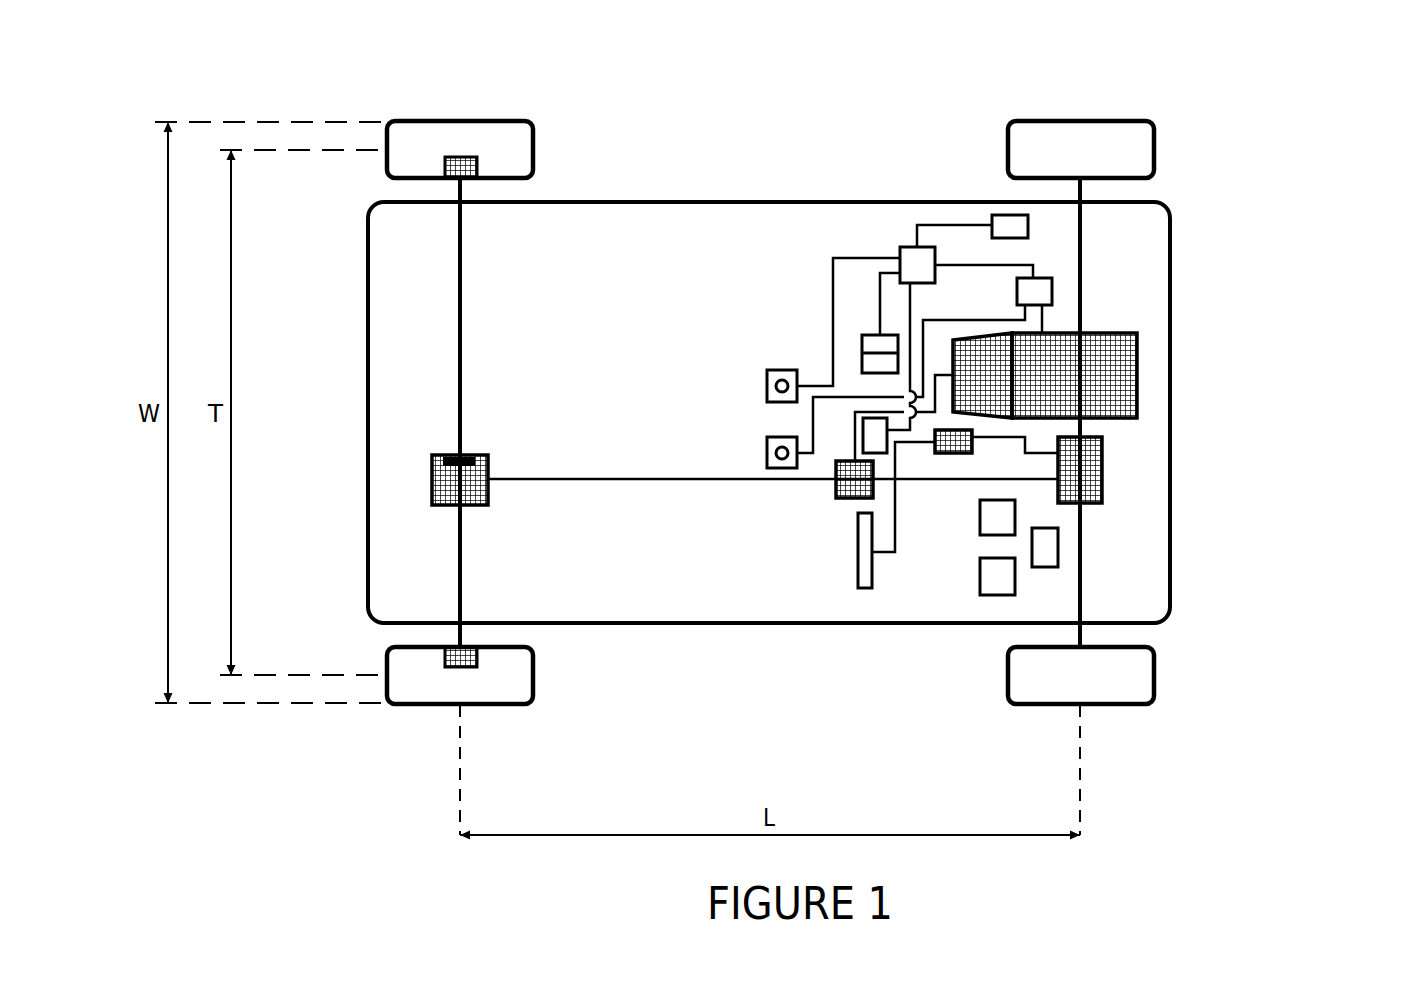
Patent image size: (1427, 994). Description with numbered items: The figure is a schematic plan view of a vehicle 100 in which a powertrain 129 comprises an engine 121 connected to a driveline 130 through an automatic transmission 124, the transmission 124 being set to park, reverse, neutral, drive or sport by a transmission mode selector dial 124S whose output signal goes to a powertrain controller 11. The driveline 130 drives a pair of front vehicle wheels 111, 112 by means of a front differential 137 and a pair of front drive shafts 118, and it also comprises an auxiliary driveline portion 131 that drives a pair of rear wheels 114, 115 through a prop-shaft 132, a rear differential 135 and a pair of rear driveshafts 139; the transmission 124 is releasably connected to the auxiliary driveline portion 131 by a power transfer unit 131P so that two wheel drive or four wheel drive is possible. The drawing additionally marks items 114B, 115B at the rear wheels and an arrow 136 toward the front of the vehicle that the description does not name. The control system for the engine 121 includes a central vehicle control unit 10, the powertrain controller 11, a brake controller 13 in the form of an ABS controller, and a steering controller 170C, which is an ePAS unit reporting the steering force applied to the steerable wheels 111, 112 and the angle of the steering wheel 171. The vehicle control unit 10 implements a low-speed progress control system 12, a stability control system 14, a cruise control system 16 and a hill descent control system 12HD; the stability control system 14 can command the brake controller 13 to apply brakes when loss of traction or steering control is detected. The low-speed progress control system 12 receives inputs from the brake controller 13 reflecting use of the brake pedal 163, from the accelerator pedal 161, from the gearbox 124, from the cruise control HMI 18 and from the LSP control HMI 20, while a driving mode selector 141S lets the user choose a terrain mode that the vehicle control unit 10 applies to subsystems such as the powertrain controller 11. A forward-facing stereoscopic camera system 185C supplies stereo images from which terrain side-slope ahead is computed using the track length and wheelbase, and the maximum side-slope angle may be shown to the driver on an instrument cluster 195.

The vehicle 100 is at (1312, 140).
The front vehicle wheel 111 is at (1125, 143).
The front vehicle wheel 112 is at (1128, 690).
The rear wheel 114 is at (432, 143).
The front wheel brake 114B is at (459, 156).
The rear wheel 115 is at (417, 682).
The front wheel brake 115B is at (468, 668).
The front drive shaft 118 is at (1202, 571).
The engine 121 is at (1107, 363).
The automatic transmission 124 is at (980, 350).
The transmission mode selector dial 124S is at (767, 452).
The powertrain 129 is at (1305, 378).
The driveline 130 is at (1272, 602).
The auxiliary driveline portion 131 is at (658, 668).
The power transfer unit 131P is at (848, 490).
The auxiliary driveshaft or prop-shaft 132 is at (620, 482).
The rear differential 135 is at (432, 481).
The front drive portion 136 is at (443, 318).
The front differential 137 is at (1093, 463).
The rear driveshaft 139 is at (460, 556).
The driving mode selector 141S is at (767, 385).
The accelerator pedal 161 is at (997, 585).
The brake pedal 163 is at (990, 518).
The steering controller 170C is at (953, 447).
The steering wheel 171 is at (866, 588).
The stereoscopic camera system 185C is at (867, 420).
The instrument cluster 195 is at (1059, 562).
The vehicle control unit 10 is at (844, 154).
The powertrain controller 11 is at (1047, 294).
The low-speed progress control system 12 is at (844, 154).
The hill descent control system 12HD is at (912, 255).
The brake controller 13 is at (1000, 222).
The stability control system 14 is at (844, 154).
The cruise control system 16 is at (844, 154).
The cruise control HMI 18 is at (827, 240).
The LSP control HMI 20 is at (862, 337).